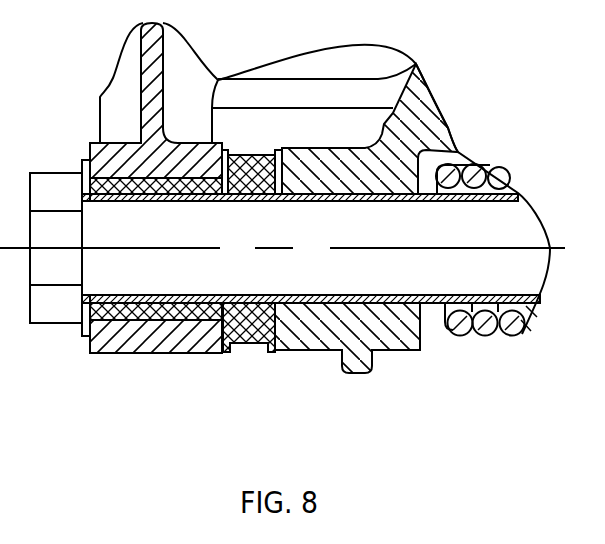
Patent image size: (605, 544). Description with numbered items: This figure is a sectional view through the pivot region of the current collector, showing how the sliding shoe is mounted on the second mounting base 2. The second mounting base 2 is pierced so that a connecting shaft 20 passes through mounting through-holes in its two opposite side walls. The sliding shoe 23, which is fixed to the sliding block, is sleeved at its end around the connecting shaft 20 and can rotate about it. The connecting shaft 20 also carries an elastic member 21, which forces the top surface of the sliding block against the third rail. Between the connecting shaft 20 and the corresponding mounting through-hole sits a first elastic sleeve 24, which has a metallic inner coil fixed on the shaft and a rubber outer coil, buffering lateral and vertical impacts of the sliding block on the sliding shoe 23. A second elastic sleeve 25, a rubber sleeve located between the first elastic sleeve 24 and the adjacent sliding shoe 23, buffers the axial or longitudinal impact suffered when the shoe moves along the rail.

The second mounting base 2 is at (146, 147).
The connecting shaft 20 is at (458, 237).
The elastic member 21 is at (483, 318).
The sliding shoe 23 is at (383, 333).
The first elastic sleeve 24 is at (112, 323).
The second elastic sleeve 25 is at (252, 335).